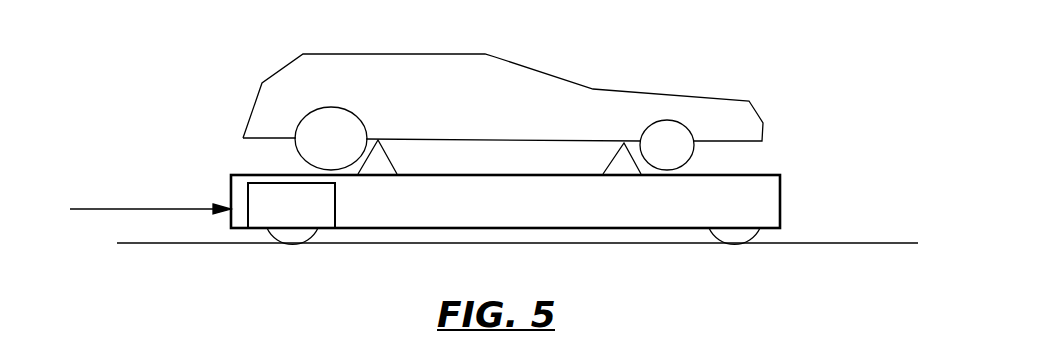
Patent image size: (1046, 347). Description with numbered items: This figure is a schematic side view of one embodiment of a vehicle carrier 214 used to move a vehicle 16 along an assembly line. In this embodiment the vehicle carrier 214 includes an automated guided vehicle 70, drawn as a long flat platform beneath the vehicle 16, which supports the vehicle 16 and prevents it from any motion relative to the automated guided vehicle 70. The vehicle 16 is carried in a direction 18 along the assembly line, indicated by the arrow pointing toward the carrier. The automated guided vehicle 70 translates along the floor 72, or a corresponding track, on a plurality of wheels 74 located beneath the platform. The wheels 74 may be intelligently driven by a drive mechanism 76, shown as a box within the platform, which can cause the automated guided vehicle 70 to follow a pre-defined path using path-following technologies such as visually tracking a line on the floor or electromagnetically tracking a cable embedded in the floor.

The vehicle 16 is at (755, 110).
The direction 18 is at (112, 209).
The automated guided vehicle 70 is at (781, 202).
The floor 72 is at (883, 243).
The wheels 74 is at (315, 232).
The drive mechanism 76 is at (279, 216).
The vehicle carrier 214 is at (203, 174).